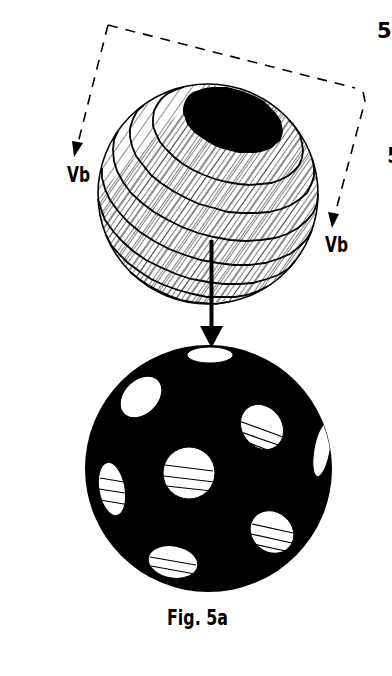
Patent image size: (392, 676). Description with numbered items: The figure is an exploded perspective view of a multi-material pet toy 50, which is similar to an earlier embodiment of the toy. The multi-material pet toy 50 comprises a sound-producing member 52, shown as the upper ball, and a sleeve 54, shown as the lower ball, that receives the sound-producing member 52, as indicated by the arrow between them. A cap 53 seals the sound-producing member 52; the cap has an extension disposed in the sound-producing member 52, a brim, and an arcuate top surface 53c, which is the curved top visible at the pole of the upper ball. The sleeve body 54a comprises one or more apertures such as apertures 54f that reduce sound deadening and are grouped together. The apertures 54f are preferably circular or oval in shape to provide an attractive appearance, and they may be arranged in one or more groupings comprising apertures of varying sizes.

The multi-material pet toy 50 is at (115, 87).
The sound-producing member 52 is at (240, 195).
The cap 53 is at (213, 98).
The arcuate top surface 53c is at (277, 90).
The sleeve 54 is at (212, 460).
The sleeve body 54a is at (277, 348).
The apertures 54f is at (106, 384).